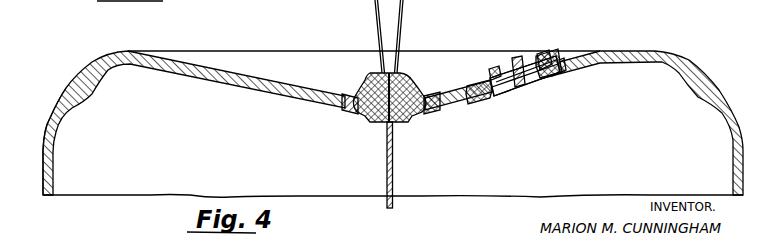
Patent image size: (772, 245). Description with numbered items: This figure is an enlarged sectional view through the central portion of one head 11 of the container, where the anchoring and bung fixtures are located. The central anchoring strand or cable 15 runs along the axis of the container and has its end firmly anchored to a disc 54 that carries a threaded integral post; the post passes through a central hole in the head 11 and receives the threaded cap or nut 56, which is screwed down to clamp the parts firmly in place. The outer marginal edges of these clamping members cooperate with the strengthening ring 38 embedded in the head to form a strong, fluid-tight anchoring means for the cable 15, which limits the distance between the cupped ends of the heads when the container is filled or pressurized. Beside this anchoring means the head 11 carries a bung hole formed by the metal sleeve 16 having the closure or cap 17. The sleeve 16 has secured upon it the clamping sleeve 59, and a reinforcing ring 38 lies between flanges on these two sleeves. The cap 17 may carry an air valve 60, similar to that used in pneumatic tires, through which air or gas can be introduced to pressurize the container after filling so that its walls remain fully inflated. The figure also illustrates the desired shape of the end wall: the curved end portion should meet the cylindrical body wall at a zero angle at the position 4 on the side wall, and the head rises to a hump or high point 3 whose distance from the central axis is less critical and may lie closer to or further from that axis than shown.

The rim of receptacle 3 is at (129, 52).
The side wall of receptacle 4 is at (47, 152).
The head 11 is at (273, 44).
The central anchoring strand or cable 15 is at (386, 162).
The metal sleeve 16 is at (484, 96).
The closure or cap 17 is at (503, 62).
The metal ring 38 is at (428, 114).
The disc 54 is at (356, 116).
The threaded cap or nut 56 is at (366, 76).
The clamping sleeve 59 is at (548, 56).
The air valve 60 is at (514, 57).